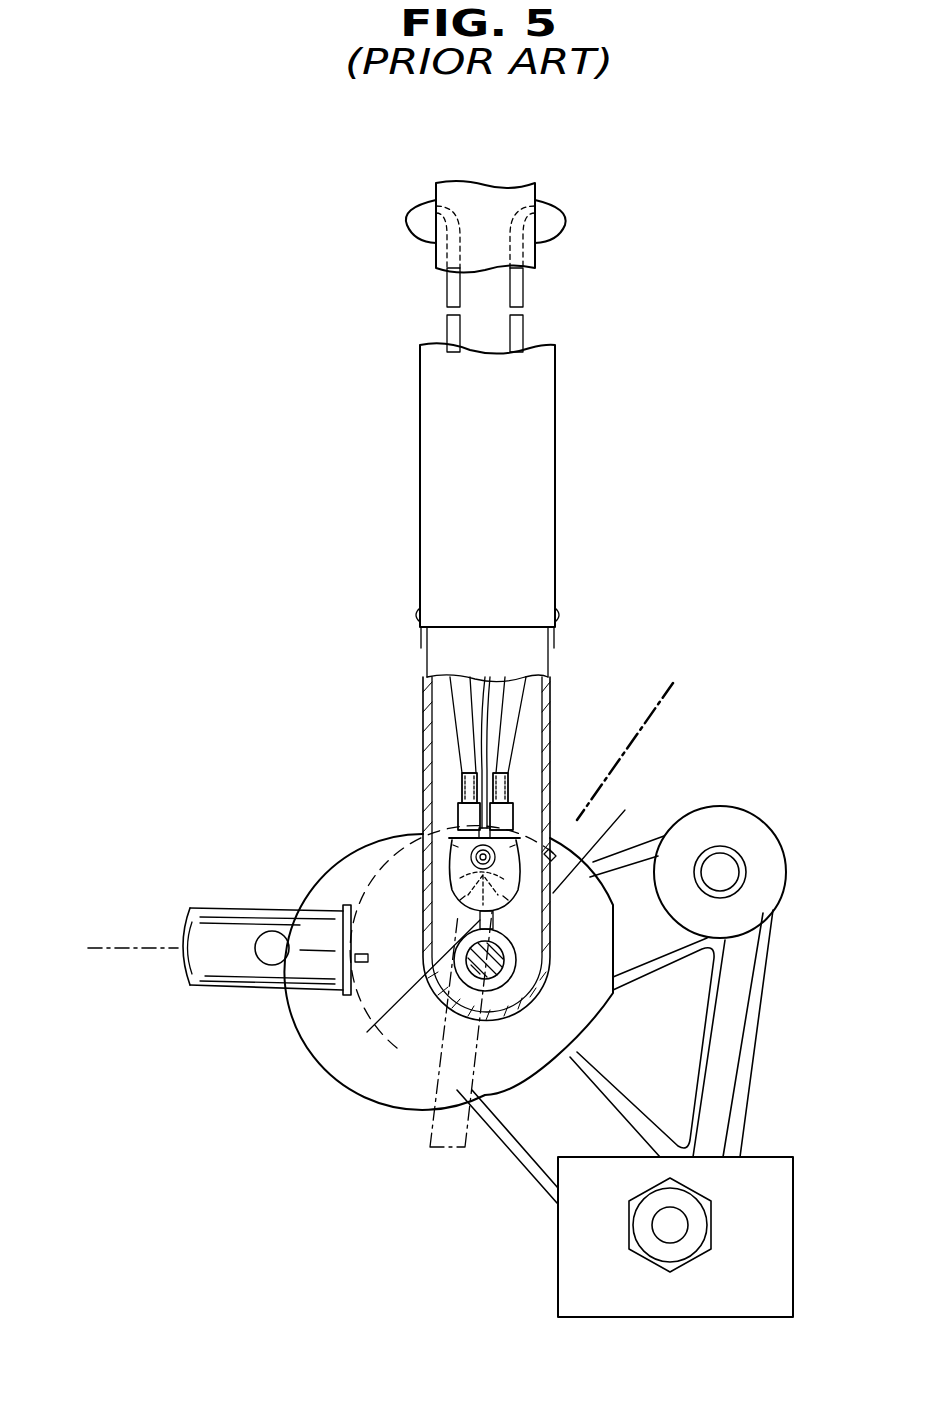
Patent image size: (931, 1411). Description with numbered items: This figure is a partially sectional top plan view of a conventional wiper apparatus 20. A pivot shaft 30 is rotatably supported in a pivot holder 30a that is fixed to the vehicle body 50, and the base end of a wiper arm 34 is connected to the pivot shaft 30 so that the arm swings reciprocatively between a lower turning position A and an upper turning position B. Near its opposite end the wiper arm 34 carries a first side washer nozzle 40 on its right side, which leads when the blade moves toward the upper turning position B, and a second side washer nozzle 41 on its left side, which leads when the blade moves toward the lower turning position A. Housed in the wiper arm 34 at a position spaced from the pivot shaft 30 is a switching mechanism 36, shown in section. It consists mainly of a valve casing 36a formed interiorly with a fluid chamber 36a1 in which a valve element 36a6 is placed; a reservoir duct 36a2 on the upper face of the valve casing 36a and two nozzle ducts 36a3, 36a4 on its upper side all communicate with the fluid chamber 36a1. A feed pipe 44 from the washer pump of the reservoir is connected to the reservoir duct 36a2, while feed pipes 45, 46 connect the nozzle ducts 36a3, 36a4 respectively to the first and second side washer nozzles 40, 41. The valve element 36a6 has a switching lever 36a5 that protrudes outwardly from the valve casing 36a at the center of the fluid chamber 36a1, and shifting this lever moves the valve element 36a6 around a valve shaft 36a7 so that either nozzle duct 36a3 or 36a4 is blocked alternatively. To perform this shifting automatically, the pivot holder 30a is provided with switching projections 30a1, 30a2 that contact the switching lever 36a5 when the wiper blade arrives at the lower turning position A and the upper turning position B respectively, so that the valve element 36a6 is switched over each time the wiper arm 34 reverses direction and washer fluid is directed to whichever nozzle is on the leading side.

The wiper apparatus 20 is at (684, 606).
The pivot shaft 30 is at (517, 968).
The pivot holder 30a is at (398, 1065).
The switching projection 30a1 is at (350, 1000).
The switching projection 30a2 is at (573, 823).
The wiper arm 34 is at (555, 482).
The switching mechanism 36 is at (520, 821).
The valve casing 36a is at (450, 878).
The fluid chamber 36a1 is at (345, 870).
The reservoir duct 36a2 is at (458, 826).
The nozzle duct 36a3 is at (508, 795).
The nozzle duct 36a4 is at (459, 805).
The switching lever 36a5 is at (462, 790).
The valve element 36a6 is at (625, 810).
The valve shaft 36a7 is at (367, 1032).
The first side washer nozzle 40 is at (563, 233).
The second side washer nozzle 41 is at (412, 230).
The feed pipe 44 is at (428, 1125).
The feed pipe 45 is at (487, 677).
The feed pipe 46 is at (463, 773).
The vehicle body 50 is at (558, 1209).
The lower turning position A is at (100, 950).
The upper turning position B is at (660, 700).